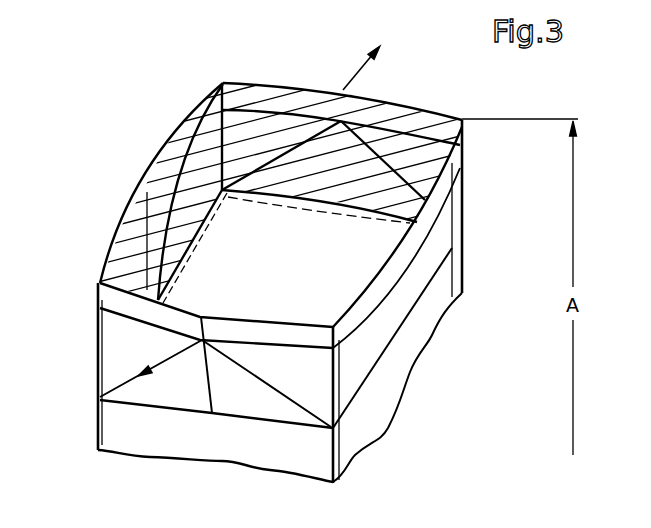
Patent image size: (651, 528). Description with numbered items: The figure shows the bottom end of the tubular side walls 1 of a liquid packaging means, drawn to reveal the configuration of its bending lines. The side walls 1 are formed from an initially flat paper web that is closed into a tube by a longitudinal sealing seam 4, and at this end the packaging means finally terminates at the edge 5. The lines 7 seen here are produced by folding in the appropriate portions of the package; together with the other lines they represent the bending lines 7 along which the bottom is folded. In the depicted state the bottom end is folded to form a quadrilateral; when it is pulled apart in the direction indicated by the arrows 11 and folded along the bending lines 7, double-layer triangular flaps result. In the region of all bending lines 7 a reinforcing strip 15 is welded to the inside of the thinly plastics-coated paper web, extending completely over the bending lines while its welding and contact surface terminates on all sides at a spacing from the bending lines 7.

The side walls 1 is at (253, 452).
The longitudinal sealing seam 4 is at (152, 225).
The edge 5 is at (263, 87).
The bending lines 7 is at (341, 206).
The arrows 11 is at (328, 207).
The reinforcing strip 15 is at (325, 207).